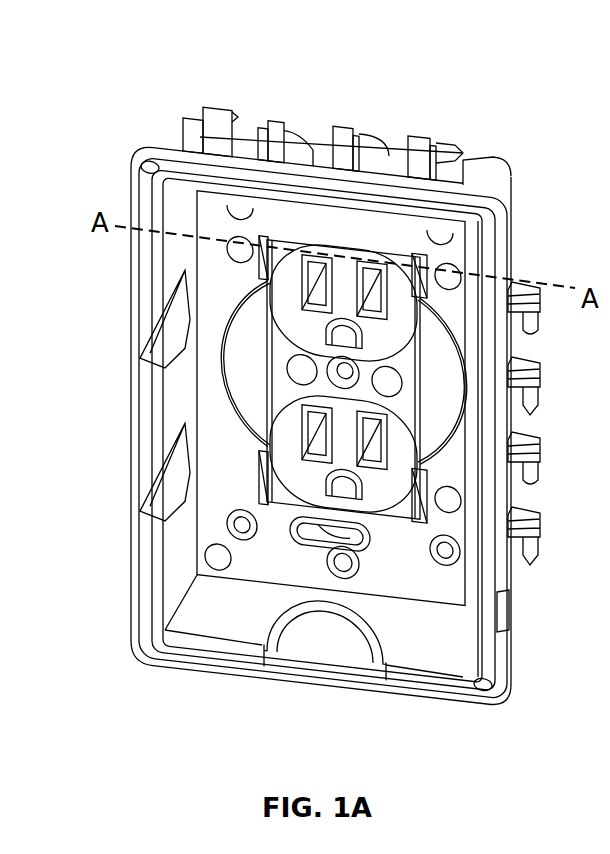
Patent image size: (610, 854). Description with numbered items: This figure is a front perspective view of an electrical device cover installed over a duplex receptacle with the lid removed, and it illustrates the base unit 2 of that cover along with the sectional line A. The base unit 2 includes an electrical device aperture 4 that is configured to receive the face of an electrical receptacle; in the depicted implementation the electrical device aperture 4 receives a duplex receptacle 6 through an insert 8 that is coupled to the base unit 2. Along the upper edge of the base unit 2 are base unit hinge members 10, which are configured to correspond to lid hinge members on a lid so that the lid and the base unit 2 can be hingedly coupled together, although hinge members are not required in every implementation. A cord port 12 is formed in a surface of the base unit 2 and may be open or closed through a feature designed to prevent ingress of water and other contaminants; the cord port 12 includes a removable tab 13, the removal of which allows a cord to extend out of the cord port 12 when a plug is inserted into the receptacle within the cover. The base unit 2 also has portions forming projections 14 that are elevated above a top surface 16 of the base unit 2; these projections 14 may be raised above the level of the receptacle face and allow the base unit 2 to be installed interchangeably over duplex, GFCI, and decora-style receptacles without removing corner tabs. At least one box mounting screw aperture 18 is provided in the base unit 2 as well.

The base unit 2 is at (492, 158).
The electrical device aperture 4 is at (412, 383).
The duplex receptacle 6 is at (300, 470).
The insert 8 is at (268, 358).
The base unit hinge member 10 is at (214, 120).
The cord port 12 is at (347, 627).
The removable tab 13 is at (307, 680).
The projections 14 is at (407, 500).
The top surface 16 is at (250, 478).
The box mounting screw aperture 18 is at (370, 542).